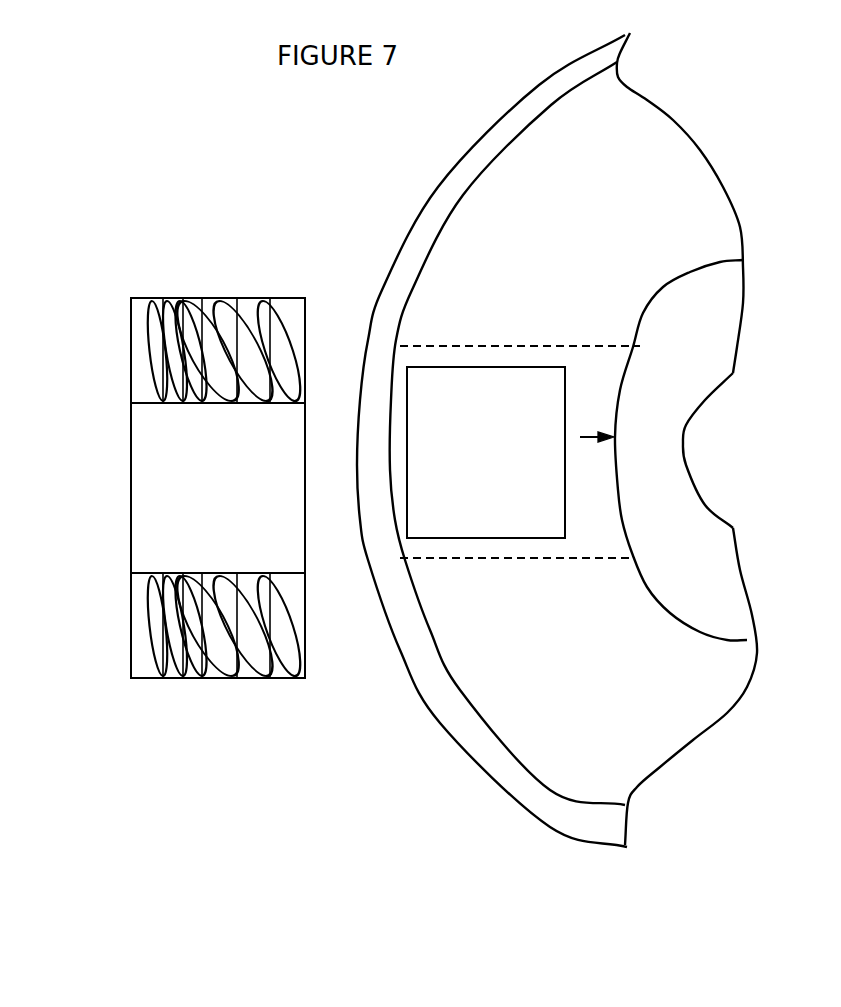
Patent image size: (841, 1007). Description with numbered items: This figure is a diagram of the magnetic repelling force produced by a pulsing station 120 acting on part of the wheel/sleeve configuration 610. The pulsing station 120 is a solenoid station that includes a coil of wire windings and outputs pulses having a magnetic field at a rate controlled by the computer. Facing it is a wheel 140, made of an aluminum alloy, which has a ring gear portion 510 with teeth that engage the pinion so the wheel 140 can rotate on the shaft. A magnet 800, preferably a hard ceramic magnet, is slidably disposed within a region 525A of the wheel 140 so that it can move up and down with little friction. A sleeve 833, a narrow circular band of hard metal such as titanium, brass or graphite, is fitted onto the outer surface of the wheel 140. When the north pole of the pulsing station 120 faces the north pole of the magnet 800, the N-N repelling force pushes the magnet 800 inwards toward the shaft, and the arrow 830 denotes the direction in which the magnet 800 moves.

The pulsing station 120 is at (121, 555).
The wheel 140 is at (449, 642).
The wheel/sleeve configuration 610 is at (413, 822).
The sleeve 833 is at (362, 332).
The magnet 800 is at (479, 382).
The arrow 830 is at (596, 416).
The ring gear portion 510 is at (696, 311).
The region 525A is at (591, 555).